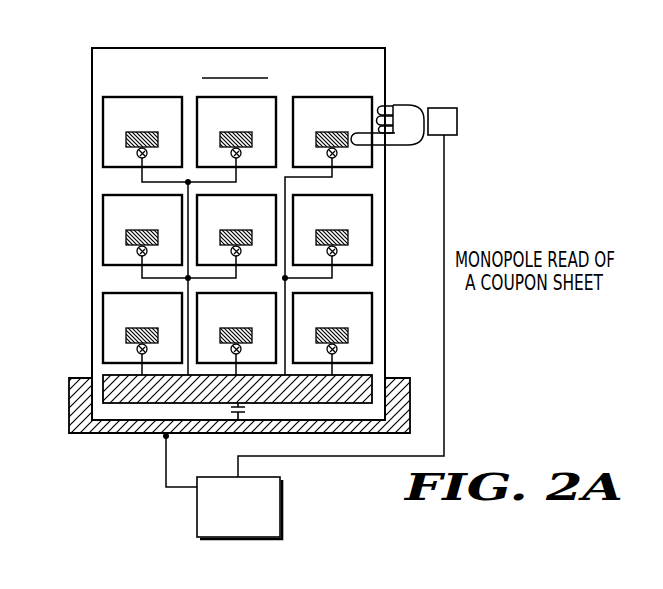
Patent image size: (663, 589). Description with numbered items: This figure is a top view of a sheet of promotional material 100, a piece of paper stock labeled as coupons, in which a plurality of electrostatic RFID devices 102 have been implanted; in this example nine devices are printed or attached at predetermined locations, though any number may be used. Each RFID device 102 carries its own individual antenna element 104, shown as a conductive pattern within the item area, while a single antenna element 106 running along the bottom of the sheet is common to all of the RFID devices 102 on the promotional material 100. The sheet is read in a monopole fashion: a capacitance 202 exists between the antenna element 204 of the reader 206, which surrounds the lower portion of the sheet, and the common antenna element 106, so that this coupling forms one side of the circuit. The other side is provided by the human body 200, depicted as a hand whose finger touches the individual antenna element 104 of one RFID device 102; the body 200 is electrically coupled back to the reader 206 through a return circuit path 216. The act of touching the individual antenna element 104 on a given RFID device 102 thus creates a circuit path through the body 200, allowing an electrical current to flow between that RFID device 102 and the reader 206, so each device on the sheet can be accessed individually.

The promotional material 100 is at (188, 48).
The RFID device 102 is at (103, 130).
The individual antenna element 104 is at (348, 144).
The common antenna element 106 is at (115, 387).
The human body 200 is at (446, 108).
The capacitance 202 is at (230, 411).
The antenna element of the reader 204 is at (69, 426).
The reader 206 is at (197, 505).
The return circuit path 216 is at (444, 352).